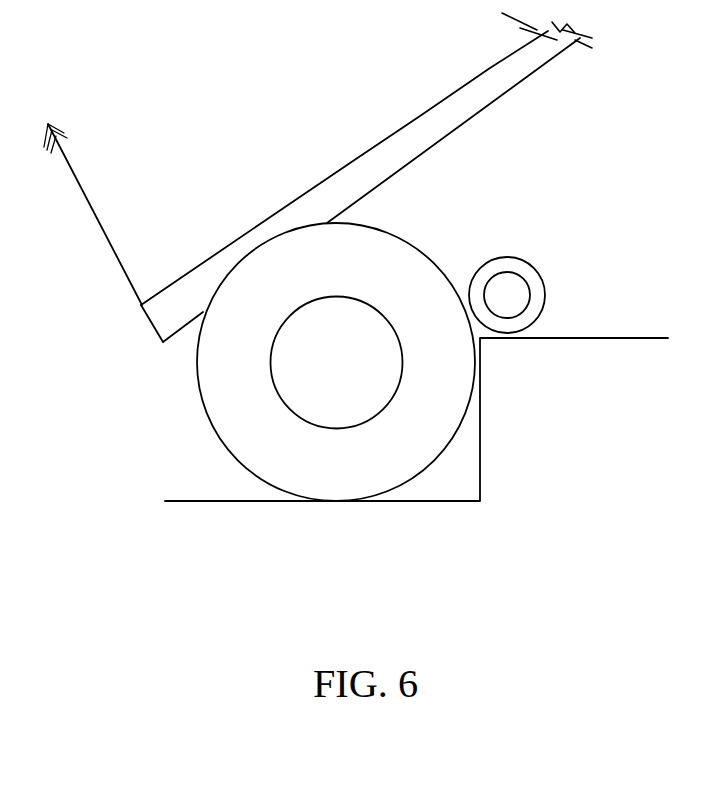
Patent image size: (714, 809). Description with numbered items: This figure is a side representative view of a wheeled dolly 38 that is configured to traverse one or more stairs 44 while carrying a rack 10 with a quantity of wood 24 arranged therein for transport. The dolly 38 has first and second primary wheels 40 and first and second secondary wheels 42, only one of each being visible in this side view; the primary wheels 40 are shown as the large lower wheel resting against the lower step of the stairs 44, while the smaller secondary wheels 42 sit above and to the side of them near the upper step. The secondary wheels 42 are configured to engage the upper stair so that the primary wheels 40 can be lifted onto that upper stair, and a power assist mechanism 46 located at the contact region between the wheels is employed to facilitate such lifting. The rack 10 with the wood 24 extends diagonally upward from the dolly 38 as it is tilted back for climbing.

The rack 10 is at (380, 163).
The quantity of wood 24 is at (143, 202).
The dolly configured to traverse one or more stairs 38 is at (512, 135).
The first and second primary wheels 40 is at (238, 425).
The first and second secondary wheels 42 is at (530, 278).
The stairs 44 is at (453, 502).
The power assist mechanism 46 is at (480, 268).